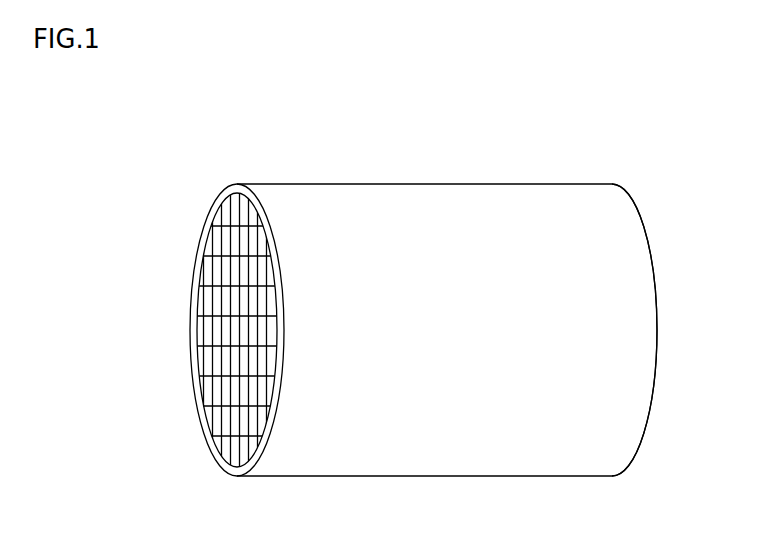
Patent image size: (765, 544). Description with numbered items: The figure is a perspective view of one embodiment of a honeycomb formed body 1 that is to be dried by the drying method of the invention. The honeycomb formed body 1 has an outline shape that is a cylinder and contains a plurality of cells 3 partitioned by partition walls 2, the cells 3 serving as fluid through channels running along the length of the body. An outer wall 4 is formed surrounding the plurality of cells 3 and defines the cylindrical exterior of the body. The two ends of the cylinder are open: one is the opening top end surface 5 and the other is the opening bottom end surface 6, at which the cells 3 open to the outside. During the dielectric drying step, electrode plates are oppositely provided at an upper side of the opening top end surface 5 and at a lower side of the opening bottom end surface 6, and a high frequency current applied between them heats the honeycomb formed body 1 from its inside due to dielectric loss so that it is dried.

The honeycomb formed body 1 is at (423, 251).
The partition walls 2 is at (210, 302).
The cells 3 is at (200, 270).
The outer wall 4 is at (302, 208).
The opening top end surface 5 is at (212, 213).
The opening bottom end surface 6 is at (645, 224).